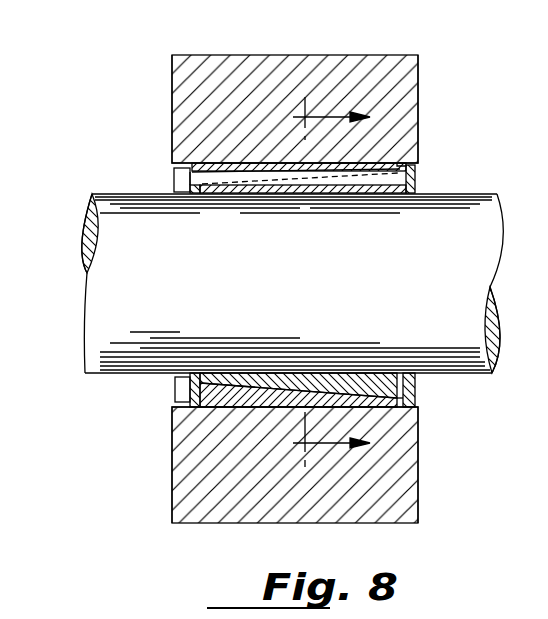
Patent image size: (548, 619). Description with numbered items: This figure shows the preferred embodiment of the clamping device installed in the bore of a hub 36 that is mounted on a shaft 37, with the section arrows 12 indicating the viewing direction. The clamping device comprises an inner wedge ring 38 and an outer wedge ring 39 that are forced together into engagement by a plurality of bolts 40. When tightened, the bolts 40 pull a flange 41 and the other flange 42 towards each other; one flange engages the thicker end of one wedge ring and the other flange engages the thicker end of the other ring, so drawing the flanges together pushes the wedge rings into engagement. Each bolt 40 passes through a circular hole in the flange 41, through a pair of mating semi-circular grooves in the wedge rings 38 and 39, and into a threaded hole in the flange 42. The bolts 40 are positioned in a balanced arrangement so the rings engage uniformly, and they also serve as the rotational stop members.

The section direction arrows 12 is at (340, 282).
The hub 36 is at (177, 120).
The shaft 37 is at (123, 212).
The inner wedge ring 38 is at (392, 376).
The outer wedge ring 39 is at (228, 410).
The bolts 40 is at (173, 183).
The flange 41 is at (196, 190).
The flange 42 is at (418, 187).